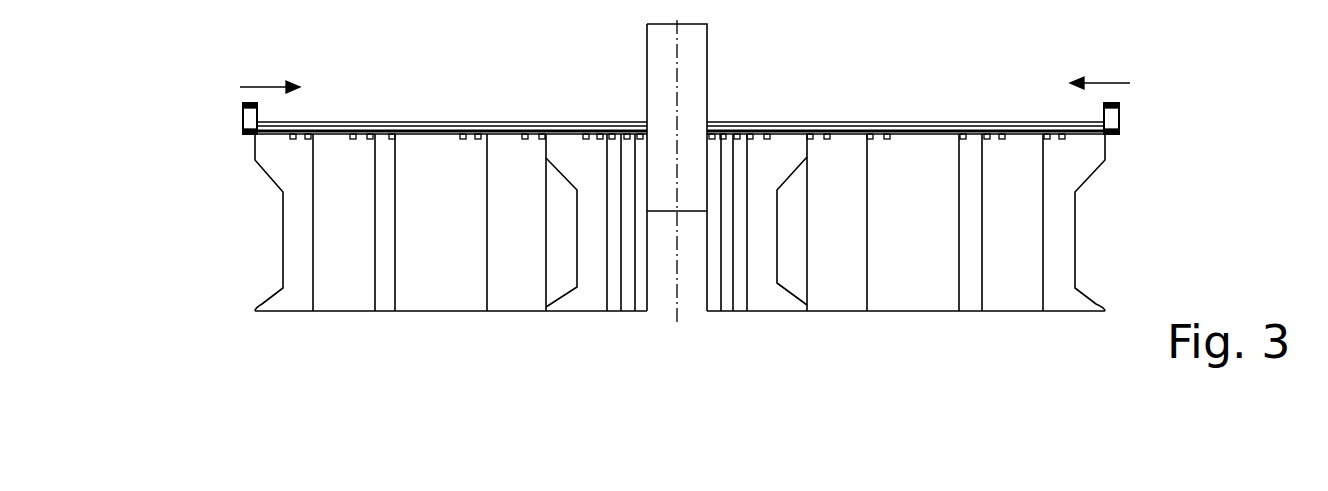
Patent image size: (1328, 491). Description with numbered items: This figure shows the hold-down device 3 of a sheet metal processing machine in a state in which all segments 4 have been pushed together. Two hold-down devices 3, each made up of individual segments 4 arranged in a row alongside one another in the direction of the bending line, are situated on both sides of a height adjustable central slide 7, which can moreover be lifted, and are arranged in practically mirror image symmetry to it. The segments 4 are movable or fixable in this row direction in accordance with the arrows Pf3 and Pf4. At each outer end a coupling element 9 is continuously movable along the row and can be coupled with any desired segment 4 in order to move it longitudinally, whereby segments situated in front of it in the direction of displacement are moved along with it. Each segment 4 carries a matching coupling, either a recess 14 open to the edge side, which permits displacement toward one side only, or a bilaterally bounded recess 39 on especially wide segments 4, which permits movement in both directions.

The hold-down device 3 is at (927, 92).
The segment 4 is at (387, 295).
The central slide 7 is at (694, 58).
The coupling element 9 is at (243, 116).
The recess 14 is at (370, 138).
The bilaterally bounded recess 39 is at (355, 138).
The arrow Pf3 is at (257, 87).
The arrow Pf4 is at (1115, 83).